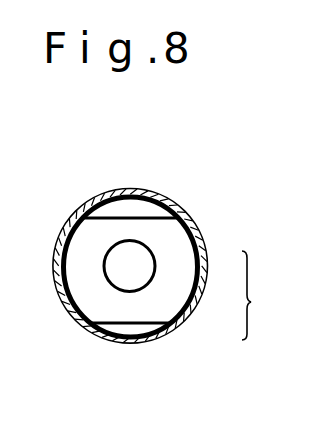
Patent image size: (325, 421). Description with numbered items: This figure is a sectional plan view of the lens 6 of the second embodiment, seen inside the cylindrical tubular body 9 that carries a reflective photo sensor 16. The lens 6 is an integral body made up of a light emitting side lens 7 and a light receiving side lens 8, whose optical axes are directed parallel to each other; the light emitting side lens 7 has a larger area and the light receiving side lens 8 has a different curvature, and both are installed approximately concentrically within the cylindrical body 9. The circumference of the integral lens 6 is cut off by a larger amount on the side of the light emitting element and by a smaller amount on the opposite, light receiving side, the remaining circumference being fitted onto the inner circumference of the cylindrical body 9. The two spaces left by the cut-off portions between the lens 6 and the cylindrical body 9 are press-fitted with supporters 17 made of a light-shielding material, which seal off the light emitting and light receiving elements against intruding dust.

The lens 6 is at (276, 316).
The light emitting side lens 7 is at (179, 264).
The light receiving side lens 8 is at (137, 276).
The tubular body 9 is at (67, 313).
The reflective photo sensor 16 is at (178, 197).
The supporter 17 is at (115, 207).